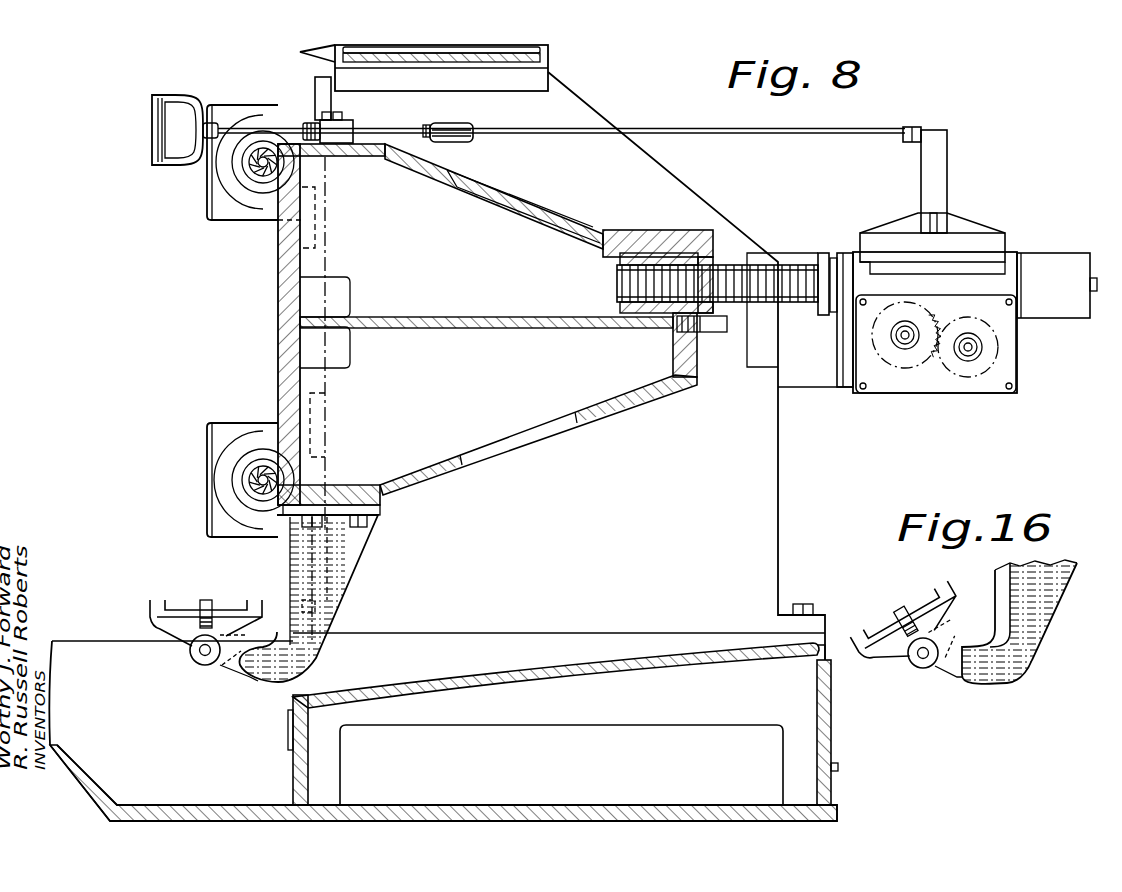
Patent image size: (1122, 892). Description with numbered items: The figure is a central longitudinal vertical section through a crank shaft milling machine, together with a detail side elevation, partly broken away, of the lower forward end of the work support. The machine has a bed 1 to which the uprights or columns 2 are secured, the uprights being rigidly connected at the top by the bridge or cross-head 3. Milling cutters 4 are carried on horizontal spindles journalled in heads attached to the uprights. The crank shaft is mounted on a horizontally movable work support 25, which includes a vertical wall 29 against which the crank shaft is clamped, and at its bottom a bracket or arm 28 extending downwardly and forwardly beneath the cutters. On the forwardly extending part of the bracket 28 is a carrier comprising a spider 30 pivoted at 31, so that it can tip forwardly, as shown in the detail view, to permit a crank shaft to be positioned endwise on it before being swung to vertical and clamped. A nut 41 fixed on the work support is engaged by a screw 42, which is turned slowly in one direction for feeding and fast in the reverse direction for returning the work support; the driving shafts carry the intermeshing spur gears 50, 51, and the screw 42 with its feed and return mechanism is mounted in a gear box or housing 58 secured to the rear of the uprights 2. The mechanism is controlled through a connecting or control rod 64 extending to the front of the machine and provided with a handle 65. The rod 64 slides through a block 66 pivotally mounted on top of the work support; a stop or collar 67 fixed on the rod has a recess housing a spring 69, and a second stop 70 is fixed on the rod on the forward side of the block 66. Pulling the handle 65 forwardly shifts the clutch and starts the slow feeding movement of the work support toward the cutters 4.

In FIG. 8, the bed 1 is at (821, 797).
In FIG. 8, the uprights or columns 2 is at (766, 508).
In FIG. 8, the bridge or cross-head 3 is at (551, 70).
In FIG. 8, the milling cutters 4 is at (262, 172).
In FIG. 8, the work support 25 is at (610, 408).
In FIG. 8, the bracket or arm 28 is at (298, 592).
In FIG. 16, the bracket or arm 28 is at (1060, 602).
In FIG. 8, the vertical wall 29 is at (287, 262).
In FIG. 8, the spider 30 is at (177, 615).
In FIG. 16, the spider 30 is at (955, 576).
In FIG. 8, the pivot 31 is at (200, 661).
In FIG. 16, the pivot 31 is at (921, 660).
In FIG. 8, the nut 41 is at (672, 304).
In FIG. 8, the screw 42 is at (800, 303).
In FIG. 8, the spur gear 50 is at (905, 358).
In FIG. 8, the spur gear 51 is at (973, 367).
In FIG. 8, the gear box or housing 58 is at (990, 247).
In FIG. 8, the connecting or control rod 64 is at (714, 128).
In FIG. 8, the handle 65 is at (156, 155).
In FIG. 8, the block 66 is at (344, 130).
In FIG. 8, the stop or collar 67 is at (460, 128).
In FIG. 8, the spring 69 is at (425, 126).
In FIG. 8, the second stop 70 is at (312, 122).